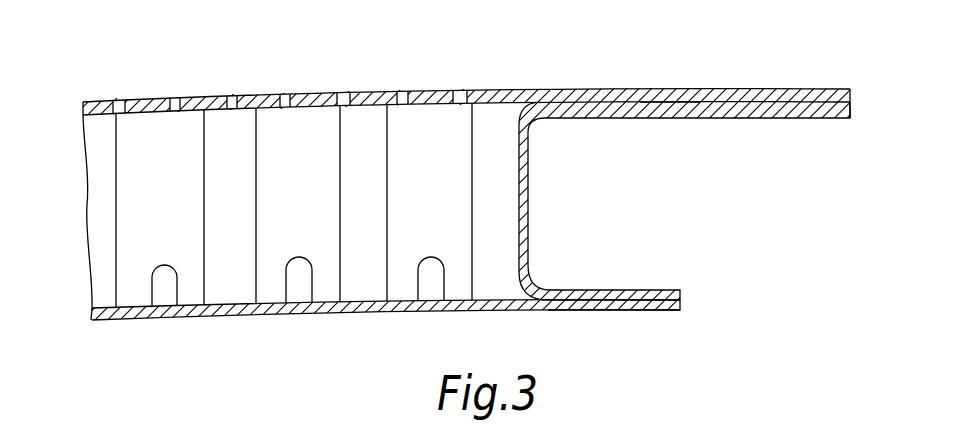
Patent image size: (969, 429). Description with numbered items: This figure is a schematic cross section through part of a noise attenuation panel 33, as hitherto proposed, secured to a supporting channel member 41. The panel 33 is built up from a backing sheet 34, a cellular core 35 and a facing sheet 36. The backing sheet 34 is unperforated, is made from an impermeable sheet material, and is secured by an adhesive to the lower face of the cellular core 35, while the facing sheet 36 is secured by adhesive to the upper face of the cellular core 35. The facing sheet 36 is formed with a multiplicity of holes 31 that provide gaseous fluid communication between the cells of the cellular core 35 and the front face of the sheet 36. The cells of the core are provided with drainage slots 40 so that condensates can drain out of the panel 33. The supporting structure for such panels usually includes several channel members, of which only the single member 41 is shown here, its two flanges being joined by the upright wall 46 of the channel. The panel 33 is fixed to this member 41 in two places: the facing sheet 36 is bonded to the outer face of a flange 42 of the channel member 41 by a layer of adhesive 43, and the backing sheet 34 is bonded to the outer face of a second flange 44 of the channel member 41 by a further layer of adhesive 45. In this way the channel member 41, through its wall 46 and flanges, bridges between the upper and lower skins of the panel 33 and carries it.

The holes 31 is at (177, 104).
The noise attenuation panel 33 is at (430, 63).
The backing sheet 34 is at (233, 313).
The cellular core 35 is at (146, 169).
The facing sheet 36 is at (273, 93).
The drainage slots 40 is at (296, 258).
The supporting channel member 41 is at (683, 132).
The flange 42 is at (826, 110).
The adhesive 43 is at (733, 104).
The flange 44 is at (643, 292).
The adhesive 45 is at (604, 311).
The channel wall 46 is at (525, 226).